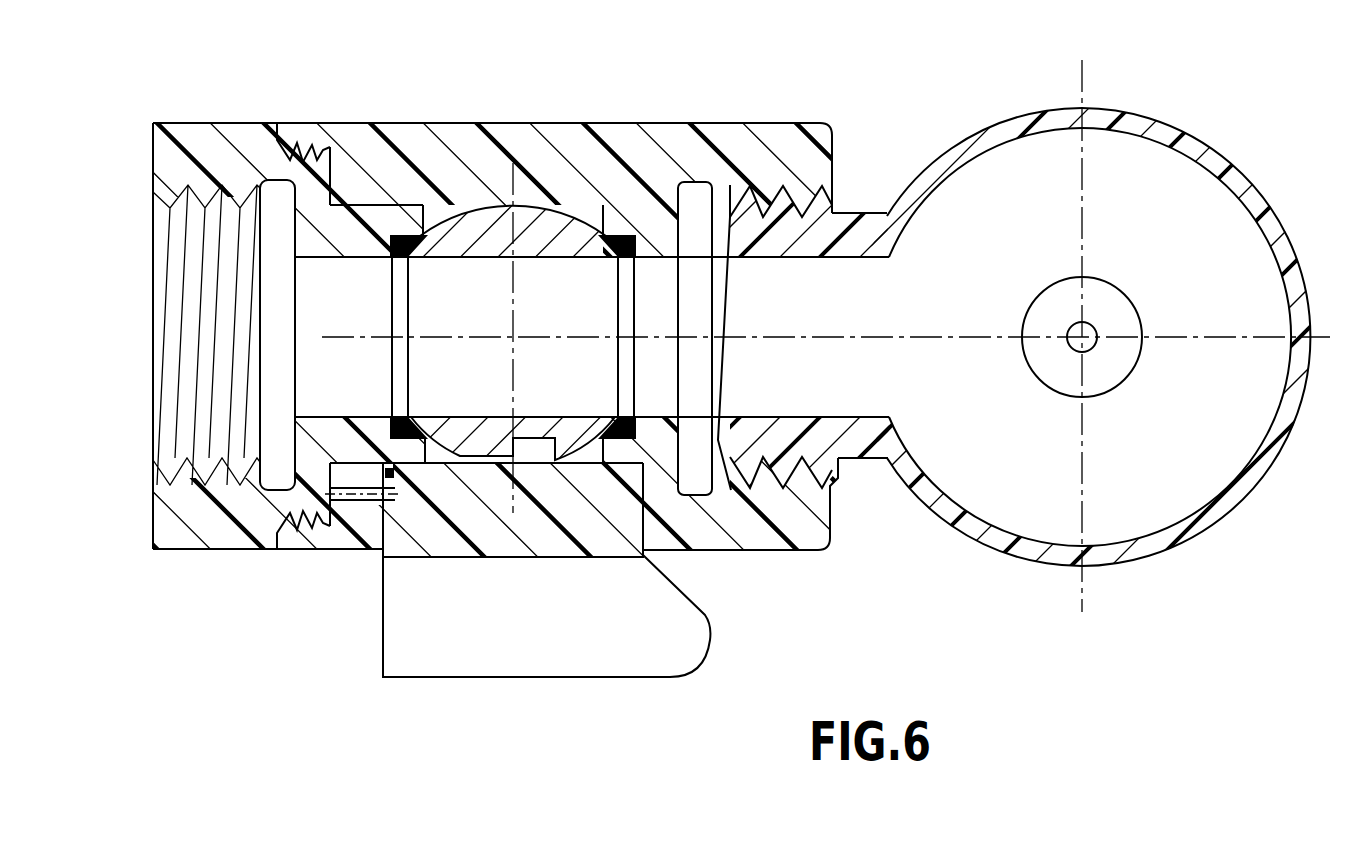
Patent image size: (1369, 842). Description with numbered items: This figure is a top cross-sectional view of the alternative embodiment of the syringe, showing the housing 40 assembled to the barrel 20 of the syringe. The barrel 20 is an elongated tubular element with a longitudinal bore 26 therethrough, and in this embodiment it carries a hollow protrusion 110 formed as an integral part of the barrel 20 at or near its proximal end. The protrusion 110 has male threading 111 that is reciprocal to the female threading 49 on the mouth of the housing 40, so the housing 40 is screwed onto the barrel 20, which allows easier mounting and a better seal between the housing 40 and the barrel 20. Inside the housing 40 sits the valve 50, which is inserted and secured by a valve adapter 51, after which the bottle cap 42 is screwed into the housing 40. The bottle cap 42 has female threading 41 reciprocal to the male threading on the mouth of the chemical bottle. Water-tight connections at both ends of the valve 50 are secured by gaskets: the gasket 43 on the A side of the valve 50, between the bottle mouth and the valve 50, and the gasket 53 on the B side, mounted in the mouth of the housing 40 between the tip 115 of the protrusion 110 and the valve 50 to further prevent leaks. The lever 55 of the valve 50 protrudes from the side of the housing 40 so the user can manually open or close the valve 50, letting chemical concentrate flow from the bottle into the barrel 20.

The barrel 20 is at (1165, 123).
The longitudinal bore 26 is at (1198, 187).
The housing 40 is at (347, 122).
The female threading 41 is at (165, 405).
The bottle cap 42 is at (193, 122).
The gasket 43 is at (272, 298).
The female threading 49 is at (730, 217).
The valve 50 is at (455, 280).
The valve adapter 51 is at (585, 213).
The gasket 53 is at (690, 202).
The lever 55 is at (397, 630).
The hollow protrusion 110 is at (875, 212).
The male threading 111 is at (770, 193).
The tip 115 is at (718, 460).